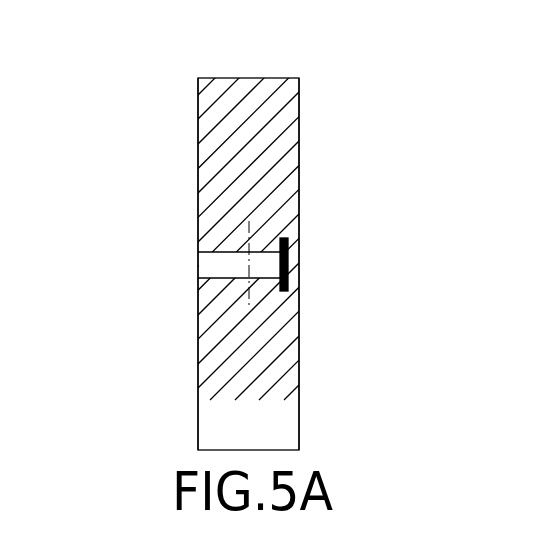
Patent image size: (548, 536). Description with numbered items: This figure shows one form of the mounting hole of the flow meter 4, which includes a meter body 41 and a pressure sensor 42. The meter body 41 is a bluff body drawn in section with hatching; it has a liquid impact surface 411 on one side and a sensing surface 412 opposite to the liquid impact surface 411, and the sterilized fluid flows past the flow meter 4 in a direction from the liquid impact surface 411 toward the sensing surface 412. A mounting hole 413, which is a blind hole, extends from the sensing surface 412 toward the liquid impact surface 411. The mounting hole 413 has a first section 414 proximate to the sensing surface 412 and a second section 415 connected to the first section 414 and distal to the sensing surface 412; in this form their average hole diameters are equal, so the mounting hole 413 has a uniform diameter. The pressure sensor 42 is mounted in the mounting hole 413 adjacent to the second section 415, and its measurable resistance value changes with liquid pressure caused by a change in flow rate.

The flow meter 4 is at (407, 120).
The meter body 41 is at (249, 78).
The liquid impact surface 411 is at (299, 125).
The sensing surface 412 is at (198, 125).
The mounting hole 413 is at (108, 265).
The first section 414 is at (227, 259).
The second section 415 is at (268, 266).
The pressure sensor 42 is at (288, 238).